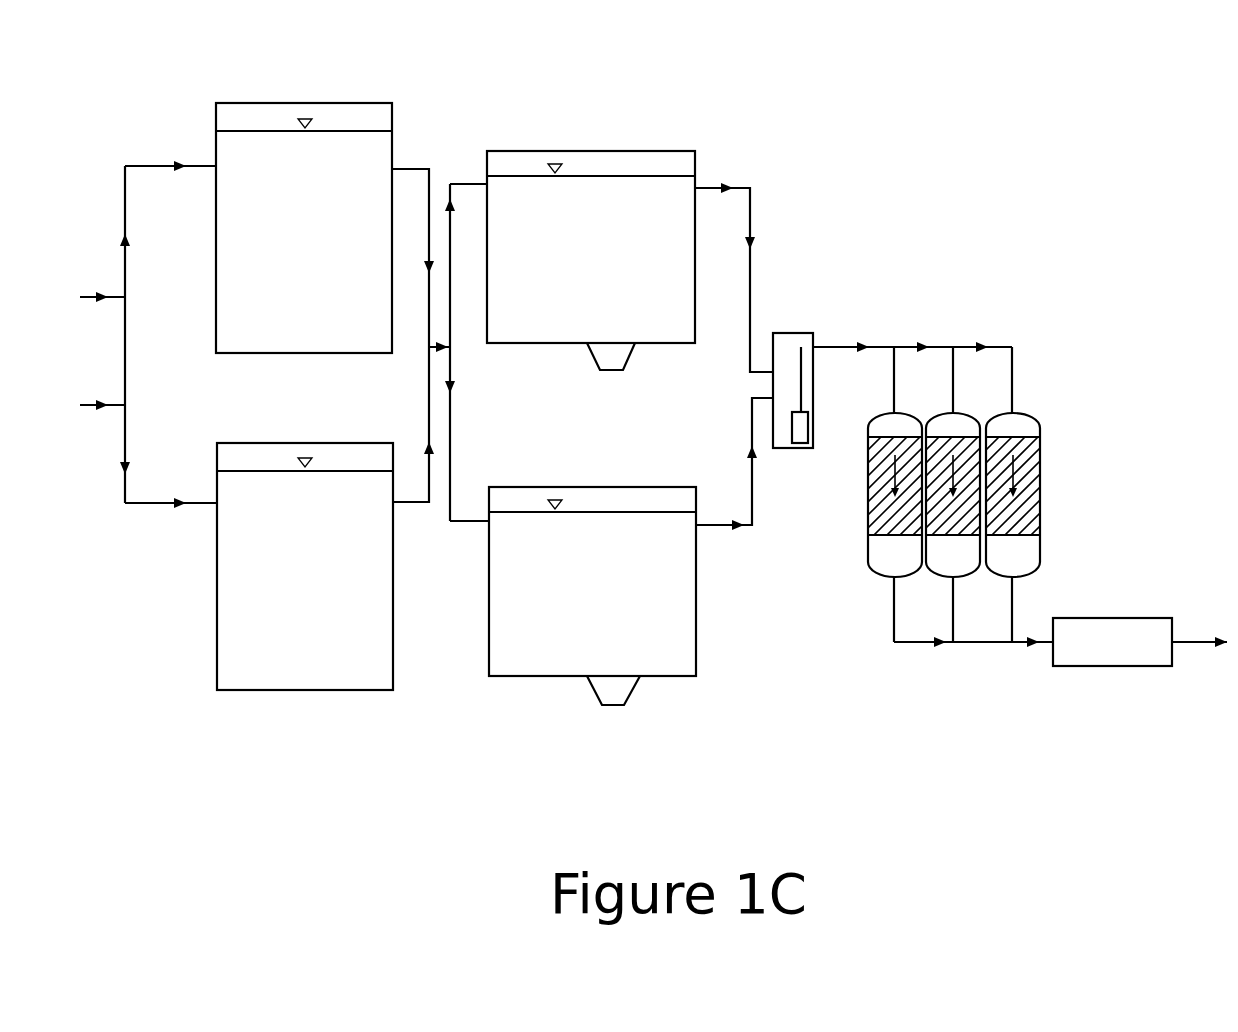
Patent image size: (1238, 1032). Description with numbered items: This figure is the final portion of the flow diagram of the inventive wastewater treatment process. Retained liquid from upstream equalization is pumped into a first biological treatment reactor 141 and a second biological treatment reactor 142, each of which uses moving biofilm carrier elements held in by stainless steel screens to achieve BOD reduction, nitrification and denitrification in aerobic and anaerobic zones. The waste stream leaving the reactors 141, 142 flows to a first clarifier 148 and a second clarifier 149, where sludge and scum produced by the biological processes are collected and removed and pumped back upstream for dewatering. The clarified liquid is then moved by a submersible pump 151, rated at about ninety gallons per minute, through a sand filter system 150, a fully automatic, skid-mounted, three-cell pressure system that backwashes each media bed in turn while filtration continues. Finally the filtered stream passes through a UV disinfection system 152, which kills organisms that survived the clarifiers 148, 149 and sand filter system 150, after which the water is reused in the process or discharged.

The first biological treatment reactor 141 is at (395, 115).
The second biological treatment reactor 142 is at (215, 668).
The first clarifier 148 is at (623, 150).
The second clarifier 149 is at (622, 487).
The sand filter system 150 is at (1047, 495).
The submersible pump 151 is at (801, 457).
The UV disinfection system 152 is at (1107, 613).